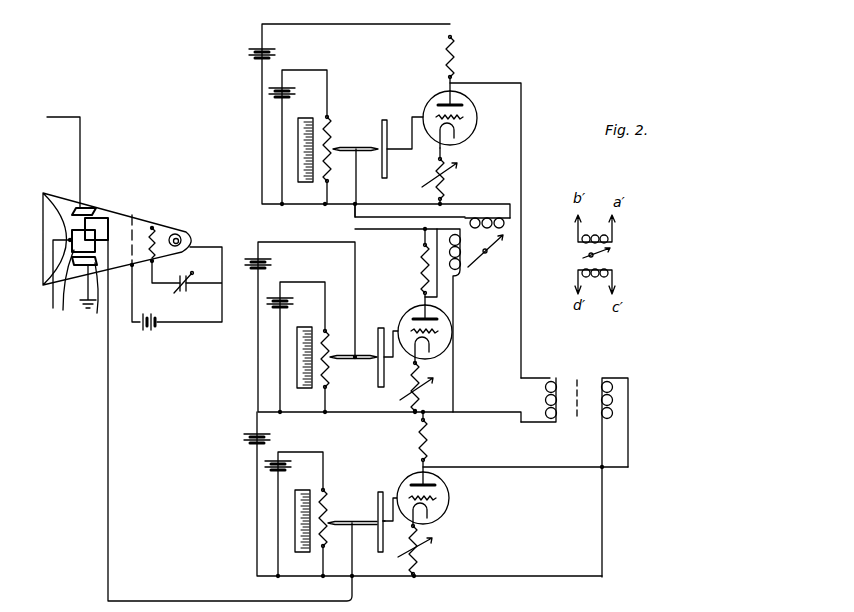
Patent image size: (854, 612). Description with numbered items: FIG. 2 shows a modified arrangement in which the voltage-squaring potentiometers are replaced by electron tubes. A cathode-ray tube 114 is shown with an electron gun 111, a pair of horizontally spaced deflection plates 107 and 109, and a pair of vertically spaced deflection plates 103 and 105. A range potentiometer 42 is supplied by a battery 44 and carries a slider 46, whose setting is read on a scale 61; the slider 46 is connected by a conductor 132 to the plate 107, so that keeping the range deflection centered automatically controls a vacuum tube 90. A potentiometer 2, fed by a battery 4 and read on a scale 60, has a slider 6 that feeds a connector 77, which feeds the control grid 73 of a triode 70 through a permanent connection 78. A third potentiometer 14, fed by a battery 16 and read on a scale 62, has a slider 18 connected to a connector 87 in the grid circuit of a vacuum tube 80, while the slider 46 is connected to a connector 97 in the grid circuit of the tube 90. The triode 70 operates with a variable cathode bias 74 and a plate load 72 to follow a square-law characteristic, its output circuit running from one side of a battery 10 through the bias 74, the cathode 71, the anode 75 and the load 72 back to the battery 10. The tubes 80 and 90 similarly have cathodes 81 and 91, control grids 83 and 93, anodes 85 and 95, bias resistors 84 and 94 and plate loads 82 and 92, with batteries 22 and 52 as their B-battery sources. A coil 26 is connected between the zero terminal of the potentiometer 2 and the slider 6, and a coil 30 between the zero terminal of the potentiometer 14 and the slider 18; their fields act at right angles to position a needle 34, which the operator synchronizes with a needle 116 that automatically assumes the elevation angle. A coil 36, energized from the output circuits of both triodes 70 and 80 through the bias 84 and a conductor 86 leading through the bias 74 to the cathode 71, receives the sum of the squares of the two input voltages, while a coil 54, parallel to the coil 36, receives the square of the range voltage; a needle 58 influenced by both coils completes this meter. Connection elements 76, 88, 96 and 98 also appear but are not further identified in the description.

The potentiometer 2 is at (333, 130).
The battery 4 is at (295, 90).
The potentiometer slider 6 is at (358, 146).
The battery 10 is at (249, 51).
The third potentiometer 14 is at (330, 378).
The battery 16 is at (295, 298).
The slider 18 is at (340, 354).
The battery 22 is at (271, 261).
The coil 26 is at (512, 226).
The coil 30 is at (463, 276).
The moving coil or magnetic needle 34 is at (508, 258).
The coil 36 is at (545, 400).
The range potentiometer 42 is at (322, 560).
The battery 44 is at (292, 460).
The potentiometer slider 46 is at (350, 520).
The battery 52 is at (244, 436).
The coil 54 is at (612, 401).
The needle 58 is at (580, 378).
The scale 60 is at (298, 172).
The scale 61 is at (295, 540).
The scale 62 is at (297, 378).
The triode 70 is at (478, 120).
The cathode 71 is at (454, 142).
The plate load 72 is at (455, 60).
The control grid 73 is at (462, 125).
The cathode bias 74 is at (455, 188).
The anode 75 is at (464, 103).
The conductor 76 is at (512, 83).
The connector 77 is at (388, 166).
The permanent connection 78 is at (417, 112).
The vacuum tube 80 is at (453, 331).
The cathode 81 is at (430, 355).
The plate load 82 is at (421, 268).
The control grid 83 is at (440, 336).
The bias resistor 84 is at (420, 397).
The anode 85 is at (416, 317).
The conductor 86 is at (437, 297).
The connector 87 is at (414, 365).
The contact plate 88 is at (390, 328).
The vacuum tube 90 is at (447, 512).
The cathode 91 is at (430, 516).
The plate load 92 is at (428, 440).
The control grid 93 is at (438, 497).
The bias resistor 94 is at (428, 553).
The anode 95 is at (412, 483).
The conductor 96 is at (548, 467).
The connector 97 is at (380, 552).
The contact plate 98 is at (391, 495).
The deflection plate 103 is at (92, 206).
The deflection plate 105 is at (88, 299).
The deflection plate 107 is at (100, 226).
The deflection plate 109 is at (58, 289).
The electron gun 111 is at (183, 236).
The cathode-ray tube 114 is at (155, 226).
The needle 116 is at (613, 257).
The conductor 132 is at (110, 548).